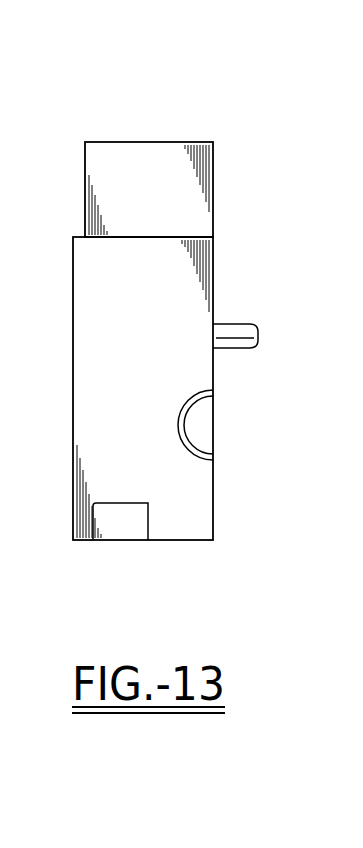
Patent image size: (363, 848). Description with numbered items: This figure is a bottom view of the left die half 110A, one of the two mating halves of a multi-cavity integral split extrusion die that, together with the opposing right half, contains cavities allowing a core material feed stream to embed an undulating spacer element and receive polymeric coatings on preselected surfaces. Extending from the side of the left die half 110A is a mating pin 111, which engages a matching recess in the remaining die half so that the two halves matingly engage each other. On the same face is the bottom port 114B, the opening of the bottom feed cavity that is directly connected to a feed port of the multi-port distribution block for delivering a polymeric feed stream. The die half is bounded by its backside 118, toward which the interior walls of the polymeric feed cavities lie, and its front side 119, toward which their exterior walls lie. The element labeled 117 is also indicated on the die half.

The left die half 110A is at (142, 130).
The backside 118 is at (200, 142).
The mating pins 111 is at (230, 323).
The bottom port 114B is at (214, 438).
The housing body 117 is at (214, 505).
The front side 119 is at (163, 541).